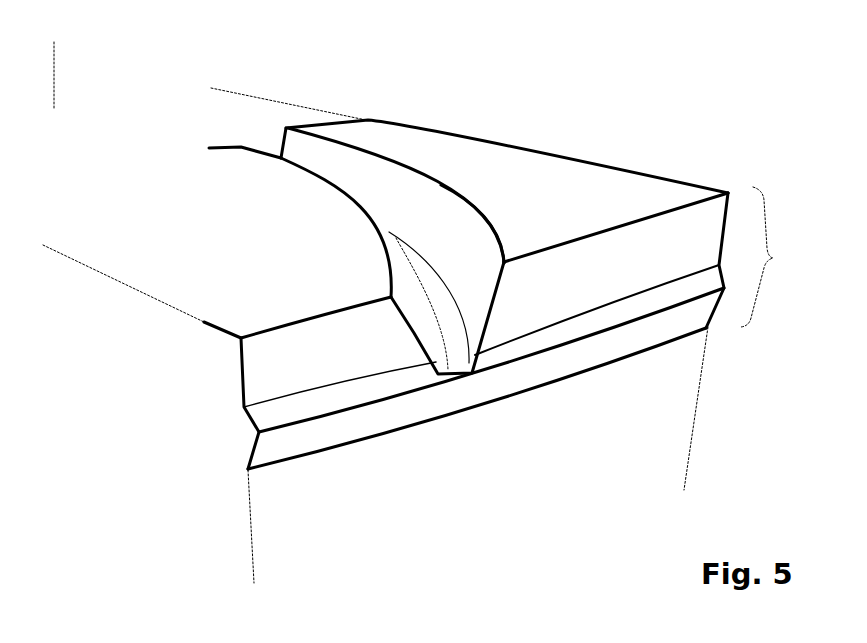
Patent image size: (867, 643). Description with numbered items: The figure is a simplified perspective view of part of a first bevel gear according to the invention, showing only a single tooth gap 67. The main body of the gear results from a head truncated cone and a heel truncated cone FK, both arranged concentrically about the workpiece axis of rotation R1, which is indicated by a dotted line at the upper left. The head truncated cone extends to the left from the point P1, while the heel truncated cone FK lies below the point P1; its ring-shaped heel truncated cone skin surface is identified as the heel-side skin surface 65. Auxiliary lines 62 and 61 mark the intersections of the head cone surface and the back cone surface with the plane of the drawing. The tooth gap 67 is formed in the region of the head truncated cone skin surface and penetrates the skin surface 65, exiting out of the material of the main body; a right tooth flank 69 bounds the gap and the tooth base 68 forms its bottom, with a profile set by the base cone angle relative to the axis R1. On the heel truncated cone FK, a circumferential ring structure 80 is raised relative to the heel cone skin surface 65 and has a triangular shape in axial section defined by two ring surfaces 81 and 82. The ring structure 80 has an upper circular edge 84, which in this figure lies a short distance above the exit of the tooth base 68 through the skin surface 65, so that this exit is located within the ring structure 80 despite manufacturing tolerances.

The auxiliary line 61 is at (250, 530).
The auxiliary line 62 is at (270, 102).
The heel-side skin surface 65 is at (120, 283).
The tooth gap 67 is at (388, 179).
The tooth base 68 is at (450, 364).
The tooth flank 69 is at (452, 225).
The circumferential ring structure 80 is at (245, 440).
The ring surface 81 is at (563, 335).
The ring surface 82 is at (610, 340).
The upper circular edge 84 is at (375, 378).
The point P1 is at (729, 189).
The workpiece axis of rotation R1 is at (60, 64).
The heel truncated cone FK is at (772, 257).